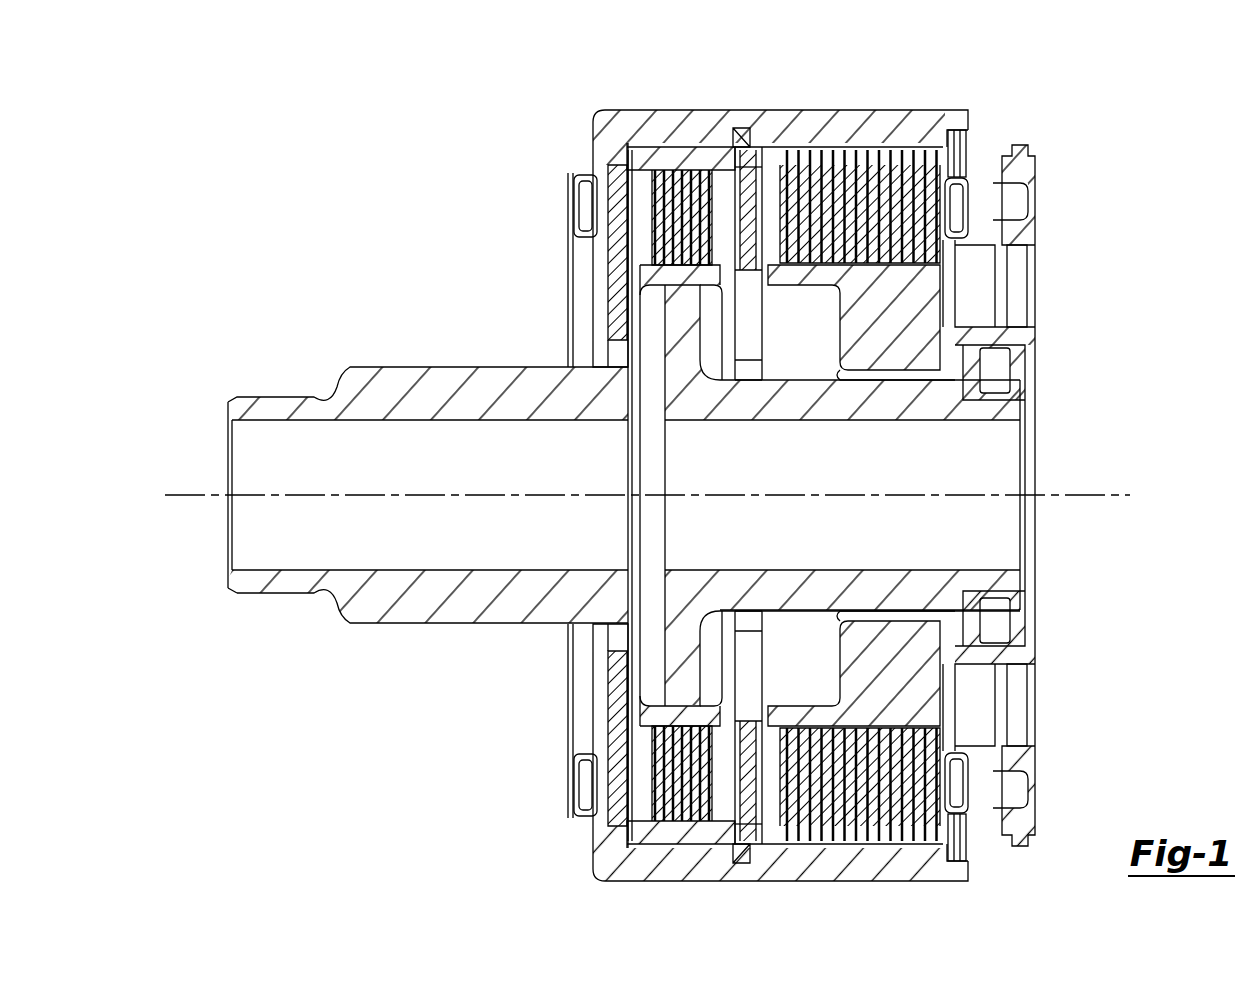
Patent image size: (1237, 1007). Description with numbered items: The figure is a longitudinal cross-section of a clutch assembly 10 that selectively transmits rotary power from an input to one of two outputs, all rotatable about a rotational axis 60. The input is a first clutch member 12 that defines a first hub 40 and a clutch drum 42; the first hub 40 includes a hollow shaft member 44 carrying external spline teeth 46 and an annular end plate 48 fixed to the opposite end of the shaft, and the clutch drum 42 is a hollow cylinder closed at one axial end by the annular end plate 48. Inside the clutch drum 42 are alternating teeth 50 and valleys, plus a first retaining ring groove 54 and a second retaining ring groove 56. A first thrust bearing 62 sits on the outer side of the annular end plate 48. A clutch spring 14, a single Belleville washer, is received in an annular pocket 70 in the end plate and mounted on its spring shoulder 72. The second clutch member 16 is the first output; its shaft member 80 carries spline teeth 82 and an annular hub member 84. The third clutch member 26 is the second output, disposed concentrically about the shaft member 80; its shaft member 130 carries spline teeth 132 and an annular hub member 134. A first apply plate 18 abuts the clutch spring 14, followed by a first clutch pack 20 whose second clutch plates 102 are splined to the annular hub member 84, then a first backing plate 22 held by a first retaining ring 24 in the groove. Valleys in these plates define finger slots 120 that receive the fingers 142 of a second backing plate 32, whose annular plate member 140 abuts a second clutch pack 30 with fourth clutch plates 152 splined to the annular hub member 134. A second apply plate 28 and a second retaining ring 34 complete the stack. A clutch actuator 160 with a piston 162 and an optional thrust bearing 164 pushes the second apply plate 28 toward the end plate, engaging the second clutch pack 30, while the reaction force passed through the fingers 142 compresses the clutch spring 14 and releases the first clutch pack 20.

The clutch assembly 10 is at (373, 696).
The first clutch member 12 is at (438, 110).
The clutch spring 14 is at (612, 673).
The second clutch member 16 is at (791, 398).
The first apply plate 18 is at (637, 130).
The first clutch pack 20 is at (677, 823).
The first backing plate 22 is at (730, 810).
The first retaining ring 24 is at (750, 132).
The third clutch member 26 is at (892, 345).
The second apply plate 28 is at (930, 805).
The second clutch pack 30 is at (850, 760).
The second backing plate 32 is at (767, 835).
The second retaining ring 34 is at (968, 135).
The first hub 40 is at (595, 270).
The clutch drum 42 is at (640, 128).
The shaft member 44 is at (413, 367).
The external spline teeth 46 is at (265, 593).
The annular end plate 48 is at (605, 318).
The teeth 50 is at (690, 840).
The first retaining ring groove 54 is at (762, 135).
The second retaining ring groove 56 is at (940, 128).
The rotational axis 60 is at (1090, 490).
The first thrust bearing 62 is at (582, 785).
The annular pocket 70 is at (587, 828).
The spring shoulder 72 is at (612, 640).
The shaft member 80 is at (790, 585).
The spline teeth 82 is at (1005, 580).
The annular hub member 84 is at (680, 640).
The second clutch plates 102 is at (690, 712).
The finger slots 120 is at (720, 185).
The shaft member 130 is at (1000, 660).
The spline teeth 132 is at (995, 620).
The annular hub member 134 is at (860, 650).
The annular plate member 140 is at (762, 790).
The fingers 142 is at (680, 162).
The fourth clutch plates 152 is at (900, 737).
The clutch actuator 160 is at (1028, 178).
The piston 162 is at (985, 810).
The thrust bearing 164 is at (965, 773).